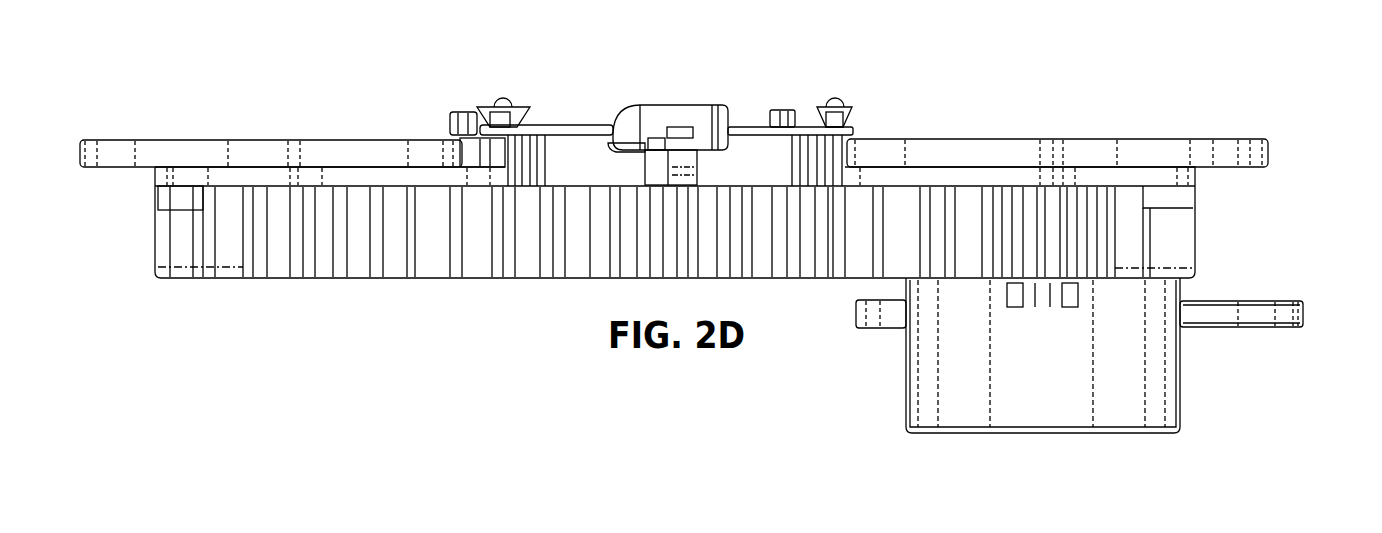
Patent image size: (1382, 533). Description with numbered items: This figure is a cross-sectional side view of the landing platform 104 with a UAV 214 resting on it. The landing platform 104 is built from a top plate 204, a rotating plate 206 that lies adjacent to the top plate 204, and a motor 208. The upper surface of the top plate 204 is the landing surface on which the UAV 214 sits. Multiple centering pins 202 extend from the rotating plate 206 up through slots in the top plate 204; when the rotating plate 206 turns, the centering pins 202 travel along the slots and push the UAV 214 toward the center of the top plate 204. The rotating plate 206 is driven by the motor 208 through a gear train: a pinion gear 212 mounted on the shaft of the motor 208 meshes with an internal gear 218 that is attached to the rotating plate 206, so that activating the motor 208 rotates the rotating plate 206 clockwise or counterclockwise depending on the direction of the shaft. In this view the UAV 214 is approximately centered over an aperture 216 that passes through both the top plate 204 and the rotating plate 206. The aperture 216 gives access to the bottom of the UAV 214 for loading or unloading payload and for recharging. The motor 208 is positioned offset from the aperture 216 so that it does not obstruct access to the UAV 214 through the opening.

The landing platform 104 is at (232, 42).
The centering pins 202 is at (460, 112).
The top plate 204 is at (1268, 160).
The rotating plate 206 is at (1195, 243).
The motor 208 is at (1180, 415).
The pinion gear 212 is at (963, 264).
The UAV 214 is at (526, 110).
The aperture 216 is at (670, 168).
The internal gear 218 is at (425, 233).